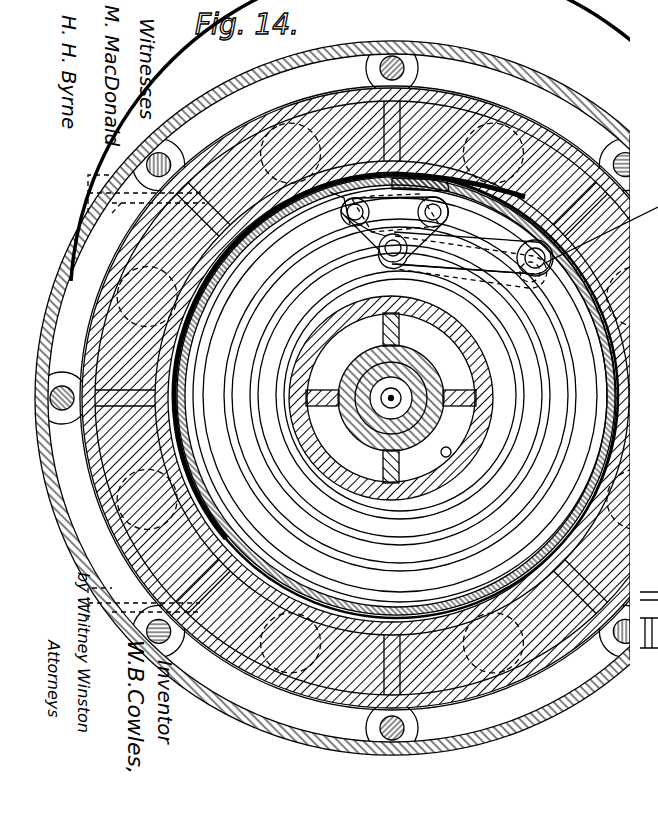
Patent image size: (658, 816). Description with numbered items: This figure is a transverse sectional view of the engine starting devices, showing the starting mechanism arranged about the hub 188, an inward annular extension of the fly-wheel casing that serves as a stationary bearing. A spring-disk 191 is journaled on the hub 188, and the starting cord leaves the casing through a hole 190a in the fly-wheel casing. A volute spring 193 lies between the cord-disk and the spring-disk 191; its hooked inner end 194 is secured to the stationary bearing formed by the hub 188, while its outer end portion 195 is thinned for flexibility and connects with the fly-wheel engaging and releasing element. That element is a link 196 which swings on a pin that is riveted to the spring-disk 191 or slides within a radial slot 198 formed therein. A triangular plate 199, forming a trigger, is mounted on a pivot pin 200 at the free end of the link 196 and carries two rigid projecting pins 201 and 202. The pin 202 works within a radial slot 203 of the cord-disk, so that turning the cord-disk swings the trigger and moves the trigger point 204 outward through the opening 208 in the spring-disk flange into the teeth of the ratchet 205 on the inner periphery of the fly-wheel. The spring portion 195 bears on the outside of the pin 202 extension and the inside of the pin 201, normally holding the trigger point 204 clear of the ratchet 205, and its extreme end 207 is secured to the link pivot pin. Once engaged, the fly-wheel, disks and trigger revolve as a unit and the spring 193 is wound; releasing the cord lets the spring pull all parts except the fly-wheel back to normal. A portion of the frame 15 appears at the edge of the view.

The frame 15 is at (657, 360).
The hub 188 is at (405, 310).
The hole 190a is at (88, 206).
The spring-disk 191 is at (482, 550).
The volute spring 193 is at (355, 552).
The inner end of spring 194 is at (446, 457).
The outer end portion of spring 195 is at (338, 204).
The link 196 is at (445, 266).
The radial slot 198 is at (471, 260).
The triangular plate 199 is at (394, 231).
The pivot pin 200 is at (391, 252).
The pin 201 is at (477, 123).
The pin 202 is at (355, 208).
The radial slot 203 is at (370, 234).
The trigger point 204 is at (310, 177).
The ratchet 205 is at (430, 92).
The extreme end of spring 207 is at (548, 142).
The opening 208 is at (436, 208).